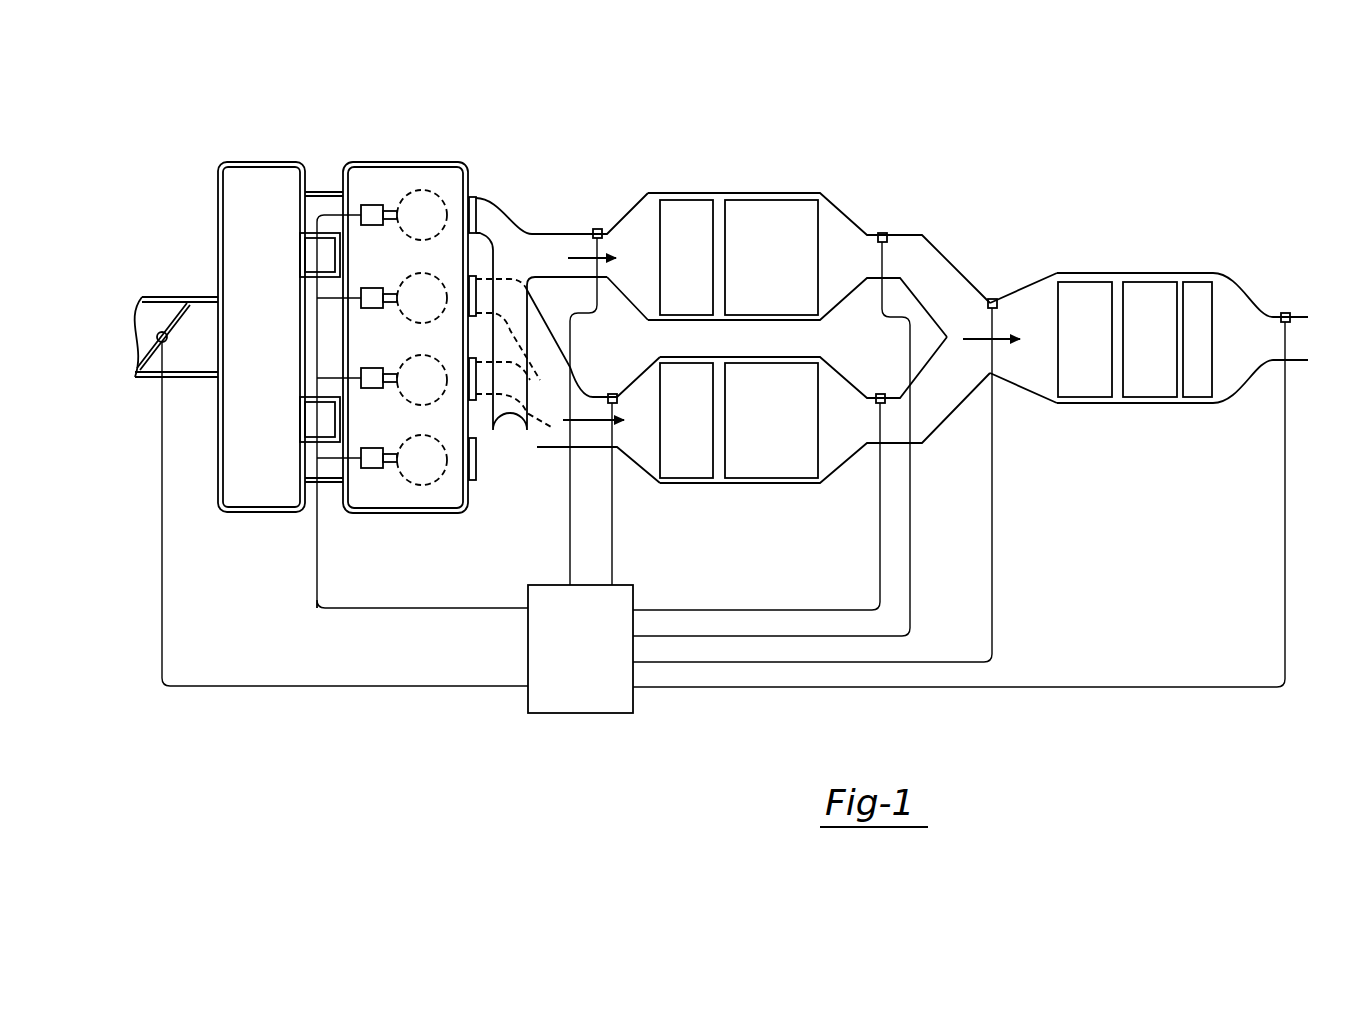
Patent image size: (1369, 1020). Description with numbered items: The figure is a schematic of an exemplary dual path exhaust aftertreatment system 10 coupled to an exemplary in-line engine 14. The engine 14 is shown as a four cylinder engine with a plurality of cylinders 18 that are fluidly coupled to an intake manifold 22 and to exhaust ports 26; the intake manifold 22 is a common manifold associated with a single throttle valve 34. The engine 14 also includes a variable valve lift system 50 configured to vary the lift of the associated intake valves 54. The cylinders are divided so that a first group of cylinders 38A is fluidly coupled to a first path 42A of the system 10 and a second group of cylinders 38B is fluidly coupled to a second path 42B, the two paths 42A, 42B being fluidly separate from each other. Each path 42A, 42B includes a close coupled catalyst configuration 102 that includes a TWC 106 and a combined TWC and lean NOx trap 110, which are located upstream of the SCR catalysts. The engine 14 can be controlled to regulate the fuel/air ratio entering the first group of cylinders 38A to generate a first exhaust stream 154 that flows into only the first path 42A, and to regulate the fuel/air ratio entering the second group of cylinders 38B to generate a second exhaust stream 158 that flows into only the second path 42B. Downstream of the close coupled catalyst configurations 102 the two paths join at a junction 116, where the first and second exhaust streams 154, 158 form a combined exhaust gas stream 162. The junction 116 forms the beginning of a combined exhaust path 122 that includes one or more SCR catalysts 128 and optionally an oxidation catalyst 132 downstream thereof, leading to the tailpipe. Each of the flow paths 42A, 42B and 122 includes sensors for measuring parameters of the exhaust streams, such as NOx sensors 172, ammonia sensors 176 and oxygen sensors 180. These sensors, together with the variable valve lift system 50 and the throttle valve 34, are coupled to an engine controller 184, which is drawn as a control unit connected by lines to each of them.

The dual path exhaust aftertreatment system 10 is at (1040, 124).
The engine 14 is at (375, 111).
The cylinders 18 is at (426, 190).
The intake manifold 22 is at (247, 161).
The exhaust ports 26 is at (478, 211).
The throttle valve 34 is at (162, 332).
The first group of cylinders 38A is at (466, 170).
The second group of cylinders 38B is at (494, 258).
The first path 42A is at (633, 203).
The second path 42B is at (638, 474).
The variable valve lift system 50 is at (366, 204).
The intake valves 54 is at (389, 211).
The close coupled catalyst configuration 102 is at (792, 176).
The TWC 106 is at (685, 199).
The combined TWC and lean NOx trap 110 is at (750, 199).
The junction 116 is at (1000, 350).
The combined exhaust path 122 is at (1039, 268).
The SCR catalysts 128 is at (1140, 272).
The oxidation catalyst 132 is at (1193, 258).
The first exhaust stream 154 is at (570, 256).
The second exhaust stream 158 is at (588, 424).
The combined exhaust gas stream 162 is at (983, 373).
The NOx sensors 172 is at (597, 228).
The ammonia sensors 176 is at (882, 232).
The oxygen sensors 180 is at (992, 298).
The engine controller 184 is at (572, 714).